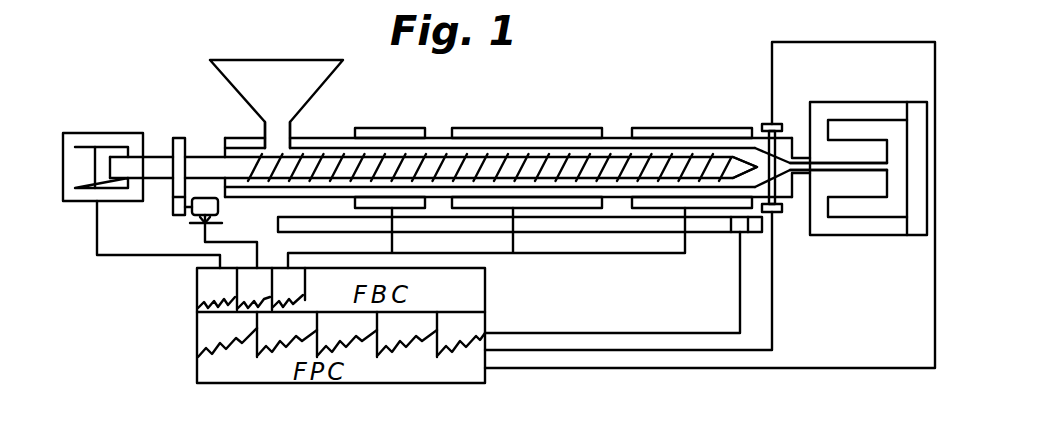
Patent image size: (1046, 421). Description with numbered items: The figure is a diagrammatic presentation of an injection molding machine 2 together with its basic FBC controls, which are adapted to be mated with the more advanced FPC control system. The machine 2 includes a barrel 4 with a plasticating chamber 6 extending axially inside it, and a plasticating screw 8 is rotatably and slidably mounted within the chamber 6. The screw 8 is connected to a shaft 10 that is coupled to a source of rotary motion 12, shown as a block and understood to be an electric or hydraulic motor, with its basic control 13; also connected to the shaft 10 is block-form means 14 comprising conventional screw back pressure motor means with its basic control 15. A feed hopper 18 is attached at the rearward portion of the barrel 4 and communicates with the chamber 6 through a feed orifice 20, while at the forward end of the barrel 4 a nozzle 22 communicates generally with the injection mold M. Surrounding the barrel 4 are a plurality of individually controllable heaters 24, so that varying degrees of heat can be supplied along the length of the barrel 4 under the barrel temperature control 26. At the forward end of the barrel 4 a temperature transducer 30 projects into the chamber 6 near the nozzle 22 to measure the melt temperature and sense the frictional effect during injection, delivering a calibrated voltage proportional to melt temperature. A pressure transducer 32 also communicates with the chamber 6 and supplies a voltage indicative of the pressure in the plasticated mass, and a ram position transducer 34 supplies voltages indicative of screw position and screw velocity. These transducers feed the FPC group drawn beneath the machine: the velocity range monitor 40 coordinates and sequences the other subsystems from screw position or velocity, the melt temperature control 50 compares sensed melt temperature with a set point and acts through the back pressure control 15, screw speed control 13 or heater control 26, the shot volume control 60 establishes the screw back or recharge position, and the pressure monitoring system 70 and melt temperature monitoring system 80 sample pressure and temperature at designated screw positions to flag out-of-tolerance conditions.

The injection molding machine 2 is at (588, 80).
The barrel 4 is at (295, 146).
The plasticating chamber 6 is at (323, 150).
The plasticating screw 8 is at (648, 165).
The shaft 10 is at (203, 157).
The source of rotary motion 12 is at (220, 206).
The basic control 13 is at (255, 289).
The screw back pressure motor means 14 is at (97, 131).
The basic control 15 is at (217, 289).
The feed hopper 18 is at (290, 73).
The feed orifice 20 is at (277, 122).
The nozzle 22 is at (802, 160).
The heaters 24 is at (637, 128).
The barrel temperature control 26 is at (289, 287).
The temperature transducer 30 is at (777, 212).
The pressure transducer 32 is at (767, 123).
The ram position transducer 34 is at (737, 233).
The velocity range monitor 40 is at (461, 336).
The melt temperature control 50 is at (407, 334).
The shot volume control 60 is at (347, 334).
The pressure monitoring system 70 is at (287, 334).
The melt temperature monitoring system 80 is at (227, 334).
The injection mold M is at (873, 127).